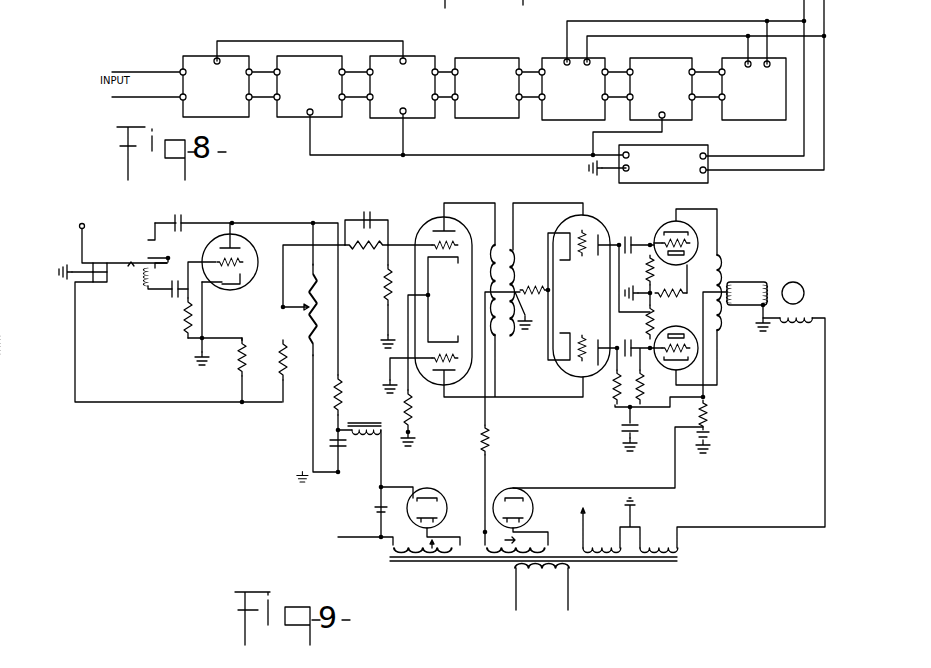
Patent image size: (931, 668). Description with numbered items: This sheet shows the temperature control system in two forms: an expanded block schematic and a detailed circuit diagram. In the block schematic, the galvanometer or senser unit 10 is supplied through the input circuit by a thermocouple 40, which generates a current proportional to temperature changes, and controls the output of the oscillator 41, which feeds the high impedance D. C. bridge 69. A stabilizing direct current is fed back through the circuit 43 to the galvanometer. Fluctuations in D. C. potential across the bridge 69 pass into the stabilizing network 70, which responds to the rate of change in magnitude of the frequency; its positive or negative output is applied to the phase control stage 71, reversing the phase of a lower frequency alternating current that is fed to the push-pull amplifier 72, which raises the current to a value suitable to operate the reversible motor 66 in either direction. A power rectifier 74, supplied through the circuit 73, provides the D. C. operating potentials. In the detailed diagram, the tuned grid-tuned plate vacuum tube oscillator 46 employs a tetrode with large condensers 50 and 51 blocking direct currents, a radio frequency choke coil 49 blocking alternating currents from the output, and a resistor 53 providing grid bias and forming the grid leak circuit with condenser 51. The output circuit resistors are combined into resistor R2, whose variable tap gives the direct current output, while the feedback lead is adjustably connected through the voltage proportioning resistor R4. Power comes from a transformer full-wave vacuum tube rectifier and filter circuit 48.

In FIG. 8, the galvanometer or senser unit 10 is at (199, 57).
In FIG. 9, the galvanometer or senser unit 10 is at (92, 283).
In FIG. 8, the feedback circuit 43 is at (231, 38).
In FIG. 9, the feedback circuit 43 is at (158, 404).
In FIG. 8, the oscillator 41 is at (288, 120).
In FIG. 9, the oscillator 41 is at (154, 352).
In FIG. 8, the high impedance D. C. bridge 69 is at (430, 60).
In FIG. 9, the high impedance D. C. bridge 69 is at (300, 292).
In FIG. 8, the stabilizing network 70 is at (494, 60).
In FIG. 9, the stabilizing network 70 is at (364, 258).
In FIG. 8, the phase control tube or stage 71 is at (552, 120).
In FIG. 9, the phase control tube or stage 71 is at (501, 320).
In FIG. 8, the push-pull amplifier 72 is at (678, 60).
In FIG. 9, the push-pull amplifier 72 is at (698, 330).
In FIG. 8, the reversible motor 66 is at (749, 120).
In FIG. 9, the reversible motor 66 is at (802, 273).
In FIG. 8, the power supply circuit 73 is at (824, 113).
In FIG. 8, the power rectifier 74 is at (693, 183).
In FIG. 9, the power rectifier 74 is at (561, 518).
In FIG. 9, the thermocouple 40 is at (86, 225).
In FIG. 9, the condenser 50 is at (182, 222).
In FIG. 9, the condenser 51 is at (170, 296).
In FIG. 9, the resistor 53 is at (200, 313).
In FIG. 9, the tuned grid-tuned plate vacuum tube oscillator 46 is at (234, 289).
In FIG. 9, the resistor R2 is at (322, 310).
In FIG. 9, the voltage proportioning resistor R4 is at (262, 370).
In FIG. 9, the radio frequency choke coil 49 is at (356, 456).
In FIG. 9, the transformer full-wave vacuum tube rectifier and filter circuit 48 is at (362, 506).